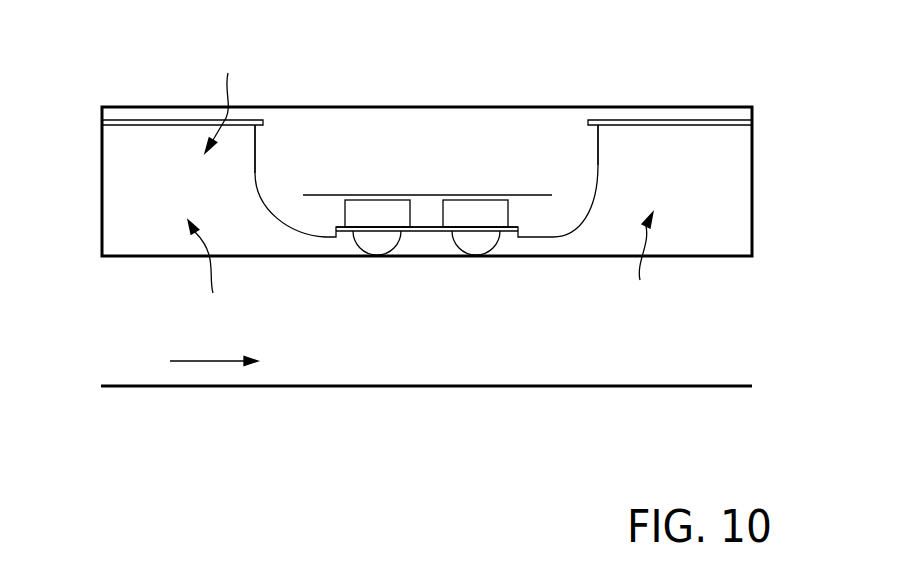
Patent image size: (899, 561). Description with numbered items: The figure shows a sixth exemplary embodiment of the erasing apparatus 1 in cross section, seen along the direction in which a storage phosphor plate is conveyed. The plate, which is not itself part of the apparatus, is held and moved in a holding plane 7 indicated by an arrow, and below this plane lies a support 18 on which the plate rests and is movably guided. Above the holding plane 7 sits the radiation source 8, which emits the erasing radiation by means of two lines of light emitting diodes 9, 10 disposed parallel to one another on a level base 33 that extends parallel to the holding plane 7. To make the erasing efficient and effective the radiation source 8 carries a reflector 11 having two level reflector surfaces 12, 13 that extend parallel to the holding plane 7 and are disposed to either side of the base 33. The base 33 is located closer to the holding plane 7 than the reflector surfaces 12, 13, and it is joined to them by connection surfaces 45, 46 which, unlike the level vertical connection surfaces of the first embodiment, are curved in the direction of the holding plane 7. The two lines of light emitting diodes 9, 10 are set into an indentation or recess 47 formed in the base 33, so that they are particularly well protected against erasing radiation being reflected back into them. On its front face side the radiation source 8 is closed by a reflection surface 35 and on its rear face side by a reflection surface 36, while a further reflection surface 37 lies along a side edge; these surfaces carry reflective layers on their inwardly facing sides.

The erasing apparatus 1 is at (748, 352).
The holding plane 7 is at (187, 360).
The radiation source 8 is at (500, 107).
The line of light emitting diodes 9 is at (368, 210).
The line of light emitting diodes 10 is at (466, 210).
The reflector 11 is at (420, 269).
The reflector surface 12 is at (158, 121).
The reflector surface 13 is at (680, 122).
The support 18 is at (352, 388).
The base 33 is at (437, 231).
The reflection surface 35 is at (102, 175).
The reflection surface 36 is at (752, 170).
The further reflection surface 37 is at (227, 97).
The connection surface 45 is at (257, 157).
The connection surface 46 is at (598, 162).
The recess 47 is at (338, 255).